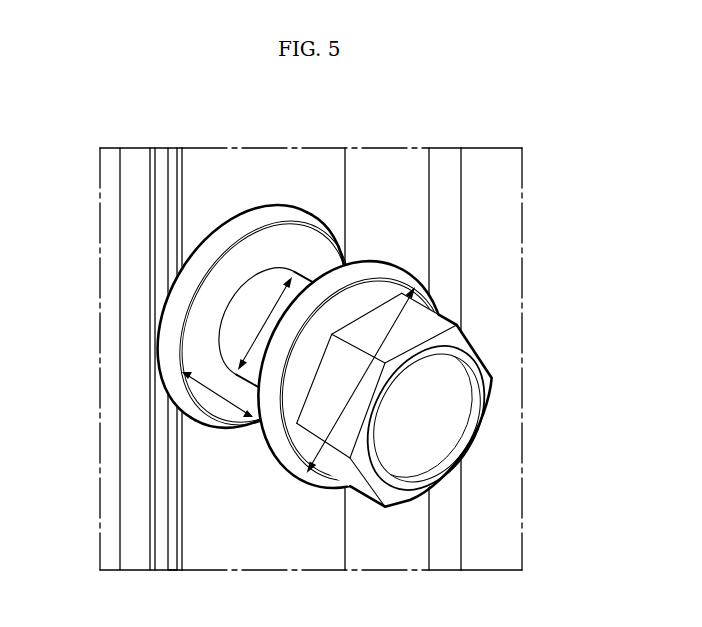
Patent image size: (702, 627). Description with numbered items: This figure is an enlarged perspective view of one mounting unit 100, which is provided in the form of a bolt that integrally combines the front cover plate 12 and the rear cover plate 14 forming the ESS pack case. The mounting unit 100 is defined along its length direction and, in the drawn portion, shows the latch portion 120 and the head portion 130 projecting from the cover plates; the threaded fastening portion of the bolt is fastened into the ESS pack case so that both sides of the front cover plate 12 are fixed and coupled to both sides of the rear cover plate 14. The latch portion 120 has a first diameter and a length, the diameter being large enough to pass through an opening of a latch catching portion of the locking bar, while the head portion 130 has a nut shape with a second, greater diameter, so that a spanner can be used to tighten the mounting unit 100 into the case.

The front cover plate 12 is at (133, 251).
The rear cover plate 14 is at (222, 170).
The mounting unit 100 is at (361, 305).
The latch portion 120 is at (268, 296).
The head portion 130 is at (378, 297).